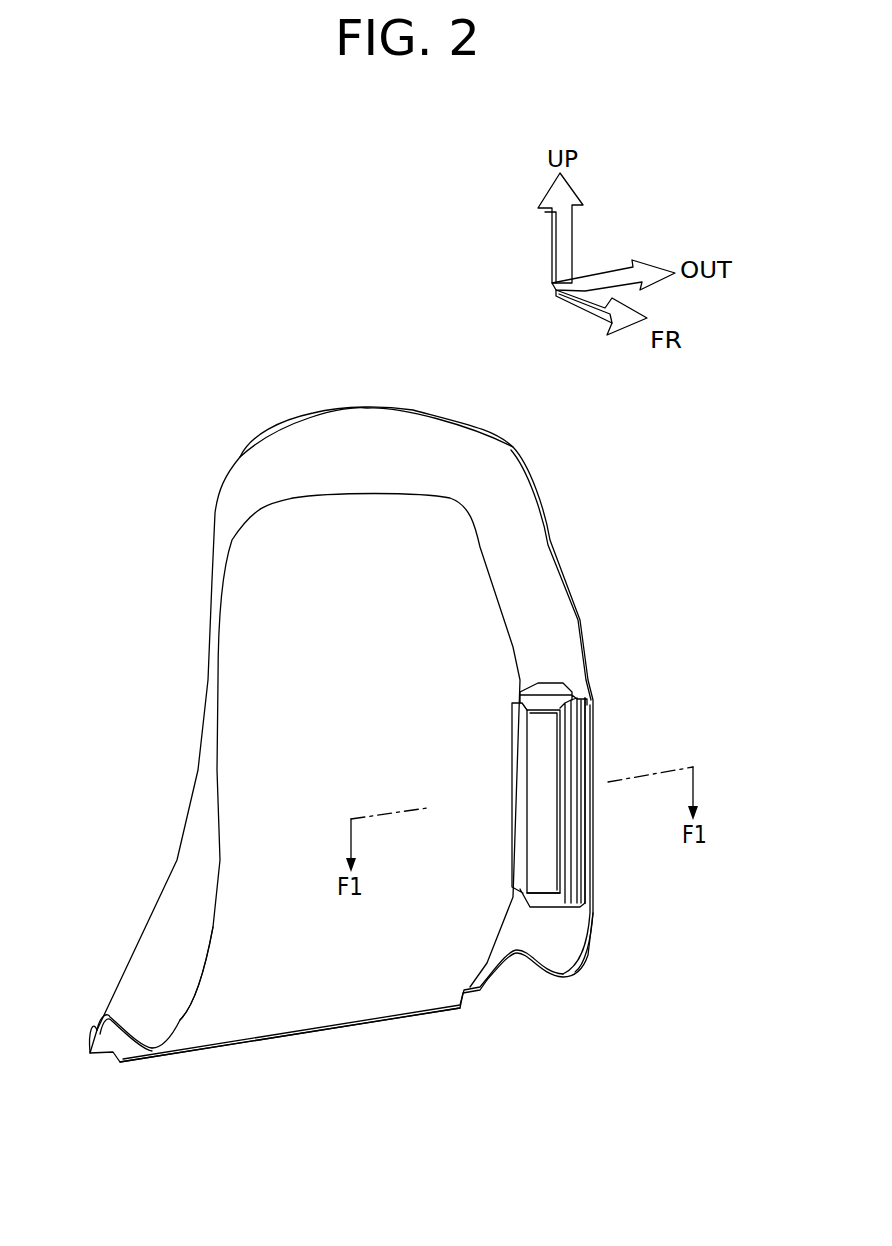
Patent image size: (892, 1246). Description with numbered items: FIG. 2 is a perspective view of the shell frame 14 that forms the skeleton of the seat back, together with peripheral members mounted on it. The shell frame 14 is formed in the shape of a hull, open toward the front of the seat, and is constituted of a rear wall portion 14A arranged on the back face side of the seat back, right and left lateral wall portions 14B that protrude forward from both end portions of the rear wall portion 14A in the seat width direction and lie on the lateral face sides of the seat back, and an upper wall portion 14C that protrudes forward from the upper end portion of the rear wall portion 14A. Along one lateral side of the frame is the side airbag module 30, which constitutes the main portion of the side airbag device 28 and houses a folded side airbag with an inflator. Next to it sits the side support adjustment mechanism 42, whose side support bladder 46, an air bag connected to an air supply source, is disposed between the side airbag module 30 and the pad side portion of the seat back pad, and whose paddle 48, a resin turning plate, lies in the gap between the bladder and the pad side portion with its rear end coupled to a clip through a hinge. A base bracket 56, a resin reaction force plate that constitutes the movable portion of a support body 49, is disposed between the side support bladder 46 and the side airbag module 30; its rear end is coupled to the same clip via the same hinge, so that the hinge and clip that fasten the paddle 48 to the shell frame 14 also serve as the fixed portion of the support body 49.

The shell frame 14 is at (193, 754).
The rear wall portion 14A is at (330, 997).
The lateral wall portions 14B is at (215, 926).
The upper wall portion 14C is at (365, 440).
The side airbag device 28 is at (581, 742).
The side airbag module 30 is at (552, 682).
The side support adjustment mechanism 42 is at (502, 735).
The side support bladder 46 is at (537, 838).
The paddle 48 is at (537, 780).
The support body 49 is at (655, 800).
The base bracket 56 is at (575, 838).